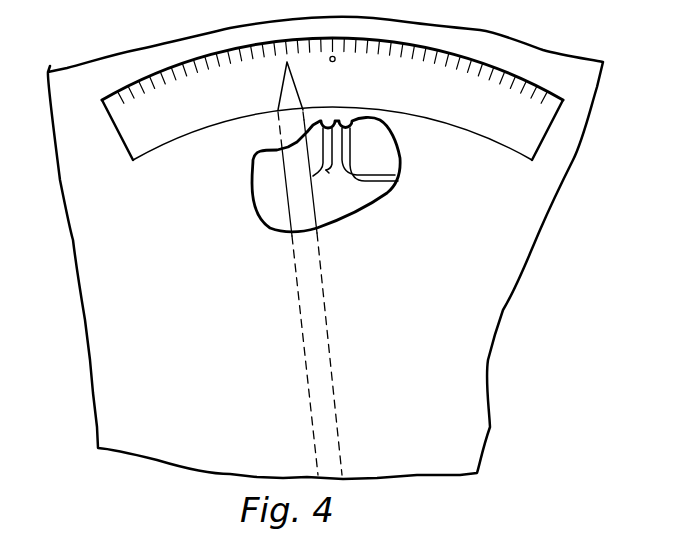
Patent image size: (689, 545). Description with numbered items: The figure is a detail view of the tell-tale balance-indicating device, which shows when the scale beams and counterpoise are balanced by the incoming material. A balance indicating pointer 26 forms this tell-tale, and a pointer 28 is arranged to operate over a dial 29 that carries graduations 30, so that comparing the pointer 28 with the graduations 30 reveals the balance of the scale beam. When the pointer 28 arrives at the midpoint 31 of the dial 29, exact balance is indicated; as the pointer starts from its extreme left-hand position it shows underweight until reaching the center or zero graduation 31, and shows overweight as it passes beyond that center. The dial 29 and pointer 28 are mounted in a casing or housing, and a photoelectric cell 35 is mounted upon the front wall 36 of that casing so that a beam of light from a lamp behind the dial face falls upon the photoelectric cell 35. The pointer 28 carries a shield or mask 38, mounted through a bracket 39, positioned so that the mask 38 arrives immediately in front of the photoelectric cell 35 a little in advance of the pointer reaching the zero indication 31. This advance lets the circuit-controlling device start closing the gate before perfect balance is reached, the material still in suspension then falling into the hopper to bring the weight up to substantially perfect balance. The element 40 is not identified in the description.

The balance indicating pointer 26 is at (332, 99).
The pointer 28 is at (313, 174).
The dial 29 is at (332, 69).
The graduations 30 is at (333, 70).
The midpoint 31 is at (317, 247).
The photoelectric cell 35 is at (377, 136).
The front wall 36 is at (325, 248).
The shield or mask 38 is at (328, 126).
The bracket 39 is at (337, 185).
The inner scale edge 40 is at (371, 133).